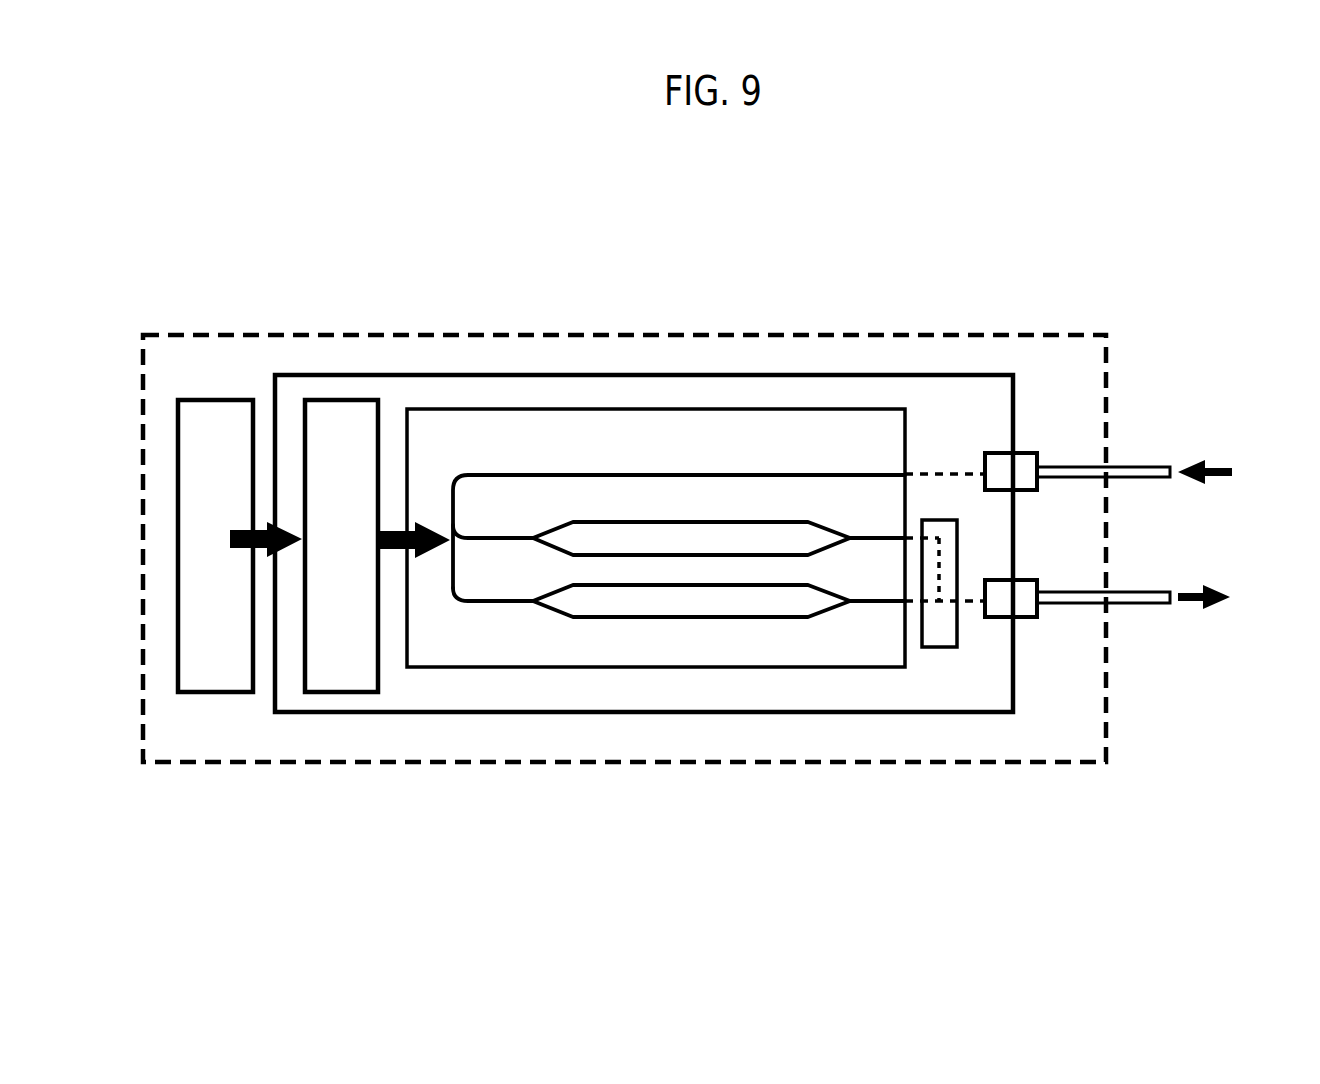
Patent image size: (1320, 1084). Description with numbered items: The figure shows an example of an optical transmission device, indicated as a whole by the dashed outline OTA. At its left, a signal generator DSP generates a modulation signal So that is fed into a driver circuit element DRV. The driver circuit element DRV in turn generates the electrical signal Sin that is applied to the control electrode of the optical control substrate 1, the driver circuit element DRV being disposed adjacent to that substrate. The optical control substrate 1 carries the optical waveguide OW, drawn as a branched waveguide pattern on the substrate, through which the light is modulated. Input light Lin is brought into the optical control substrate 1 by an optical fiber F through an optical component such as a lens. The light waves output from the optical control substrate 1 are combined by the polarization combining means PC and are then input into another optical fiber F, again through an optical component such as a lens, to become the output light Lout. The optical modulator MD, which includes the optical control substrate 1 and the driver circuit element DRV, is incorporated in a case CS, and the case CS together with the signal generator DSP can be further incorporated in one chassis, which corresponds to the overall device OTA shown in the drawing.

The optical transmitter assembly OTA is at (345, 768).
The signal generator DSP is at (212, 404).
The driver circuit element DRV is at (340, 400).
The optical modulator MD is at (603, 715).
The case CS is at (644, 560).
The optical control substrate 1 is at (598, 426).
The optical waveguide OW is at (760, 622).
The polarization combining means PC is at (958, 645).
The optical fiber F is at (1076, 467).
The modulation signal So is at (254, 527).
The drive signal Sin is at (424, 530).
The input light Lin is at (1227, 473).
The output light Lout is at (1234, 599).